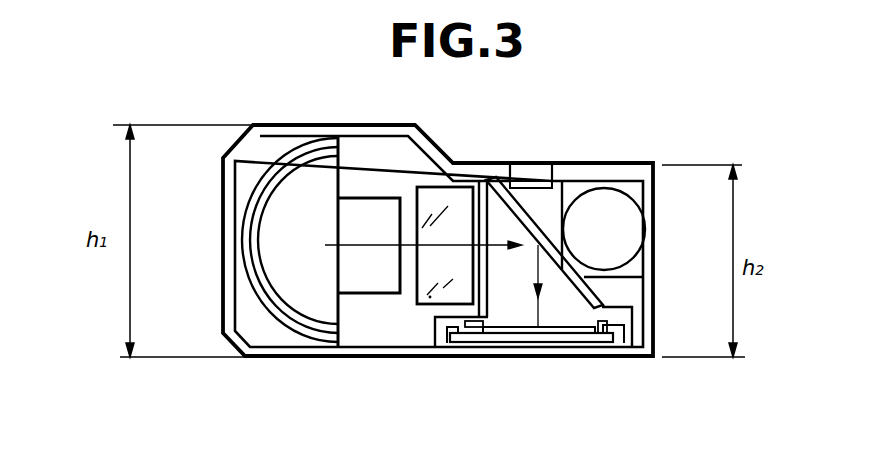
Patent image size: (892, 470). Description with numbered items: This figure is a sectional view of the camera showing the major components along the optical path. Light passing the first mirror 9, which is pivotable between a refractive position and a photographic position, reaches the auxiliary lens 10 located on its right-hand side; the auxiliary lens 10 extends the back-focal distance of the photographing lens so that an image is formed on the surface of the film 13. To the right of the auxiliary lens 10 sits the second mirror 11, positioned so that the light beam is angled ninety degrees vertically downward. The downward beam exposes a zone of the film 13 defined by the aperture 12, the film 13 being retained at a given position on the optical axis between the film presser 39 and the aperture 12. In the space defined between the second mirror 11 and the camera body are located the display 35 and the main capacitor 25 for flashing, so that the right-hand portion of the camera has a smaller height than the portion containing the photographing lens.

The first mirror 9 is at (380, 283).
The auxiliary lens 10 is at (458, 200).
The second mirror 11 is at (508, 185).
The aperture 12 is at (490, 318).
The film 13 is at (568, 328).
The main capacitor 25 is at (613, 210).
The display 35 is at (545, 181).
The film presser 39 is at (530, 343).